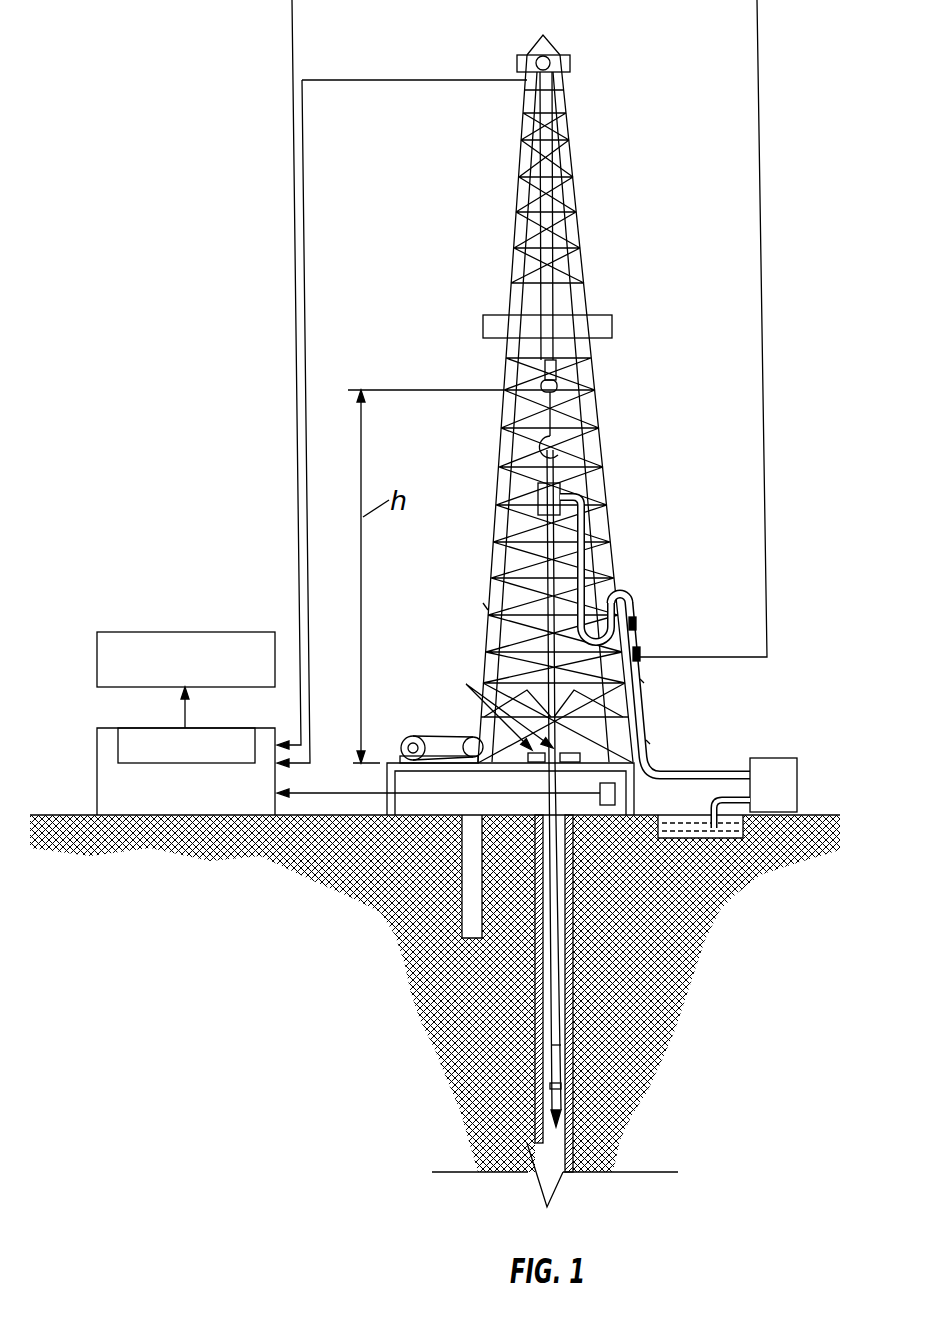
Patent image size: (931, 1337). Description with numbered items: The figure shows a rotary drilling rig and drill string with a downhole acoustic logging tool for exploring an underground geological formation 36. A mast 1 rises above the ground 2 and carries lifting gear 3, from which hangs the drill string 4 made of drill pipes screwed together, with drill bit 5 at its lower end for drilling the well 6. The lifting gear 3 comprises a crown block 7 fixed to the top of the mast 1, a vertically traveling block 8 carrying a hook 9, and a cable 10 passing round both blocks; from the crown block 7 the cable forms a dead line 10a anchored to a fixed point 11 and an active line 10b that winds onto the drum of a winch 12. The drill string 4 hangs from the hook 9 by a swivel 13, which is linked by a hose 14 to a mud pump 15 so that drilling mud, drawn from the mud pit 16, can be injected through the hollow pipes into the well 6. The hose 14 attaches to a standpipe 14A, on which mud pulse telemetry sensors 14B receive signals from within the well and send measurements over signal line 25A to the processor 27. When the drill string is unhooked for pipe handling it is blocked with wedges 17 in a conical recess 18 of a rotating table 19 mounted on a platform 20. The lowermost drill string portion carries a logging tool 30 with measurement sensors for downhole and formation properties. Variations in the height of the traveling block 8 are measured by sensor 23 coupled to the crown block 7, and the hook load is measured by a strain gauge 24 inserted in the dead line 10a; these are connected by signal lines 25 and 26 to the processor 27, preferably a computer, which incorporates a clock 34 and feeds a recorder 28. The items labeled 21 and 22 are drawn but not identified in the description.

The mast 1 is at (602, 445).
The ground 2 is at (418, 814).
The lifting gear 3 is at (607, 352).
The drill string 4 is at (553, 968).
The drill bit 5 is at (556, 1107).
The well 6 is at (553, 1147).
The crown block 7 is at (549, 61).
The traveling block 8 is at (548, 398).
The hook 9 is at (538, 458).
The cable 10 is at (521, 296).
The dead line 10a is at (592, 497).
The active line 10b is at (485, 607).
The fixed point 11 is at (609, 808).
The winch 12 is at (457, 737).
The swivel 13 is at (537, 509).
The hose 14 is at (633, 600).
The standpipe 14A is at (637, 624).
The sensors 14B is at (640, 652).
The mud pump 15 is at (780, 758).
The mud pit 16 is at (700, 822).
The wedges 17 is at (494, 708).
The conical recess 18 is at (642, 681).
The rotating table 19 is at (573, 756).
The platform 20 is at (648, 742).
The mud hose 21 is at (605, 548).
The mouse hole 22 is at (462, 885).
The sensor 23 is at (555, 92).
The strain gauge 24 is at (602, 805).
The signal line 25 is at (303, 347).
The signal line 25A is at (770, 347).
The signal line 26 is at (377, 793).
The processor 27 is at (105, 728).
The recorder 28 is at (117, 632).
The tool 30 is at (557, 1050).
The clock 34 is at (186, 745).
The geological formation 36 is at (700, 950).